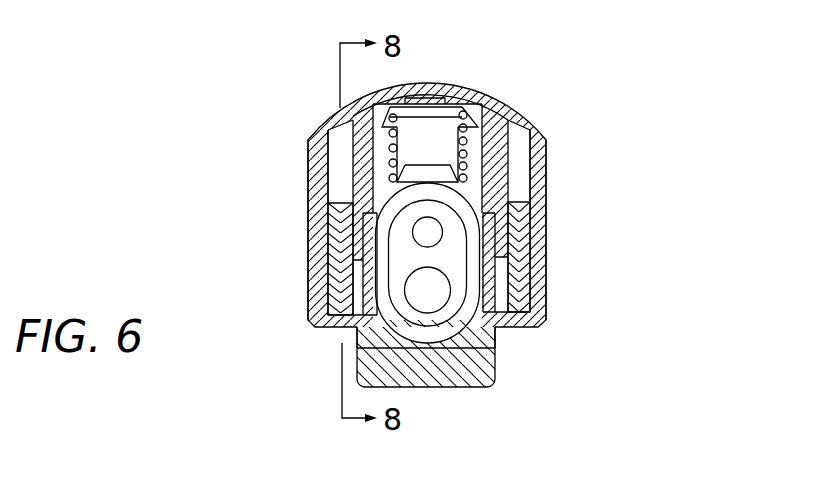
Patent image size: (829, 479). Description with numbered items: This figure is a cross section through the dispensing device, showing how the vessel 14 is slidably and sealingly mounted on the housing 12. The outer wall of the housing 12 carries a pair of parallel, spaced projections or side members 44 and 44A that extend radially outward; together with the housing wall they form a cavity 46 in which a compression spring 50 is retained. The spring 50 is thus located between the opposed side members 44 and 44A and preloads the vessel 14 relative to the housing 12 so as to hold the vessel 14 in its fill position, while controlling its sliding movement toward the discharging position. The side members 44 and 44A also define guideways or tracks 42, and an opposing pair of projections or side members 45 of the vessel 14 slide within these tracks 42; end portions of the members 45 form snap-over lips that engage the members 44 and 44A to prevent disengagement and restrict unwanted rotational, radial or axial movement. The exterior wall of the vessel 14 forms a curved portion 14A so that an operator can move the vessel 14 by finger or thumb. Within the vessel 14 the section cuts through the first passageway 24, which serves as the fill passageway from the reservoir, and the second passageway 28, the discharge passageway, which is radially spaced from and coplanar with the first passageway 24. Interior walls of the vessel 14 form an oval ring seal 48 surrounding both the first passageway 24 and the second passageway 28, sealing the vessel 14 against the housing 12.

The housing 12 is at (568, 123).
The vessel 14 is at (509, 367).
The curved portion 14A is at (356, 352).
The first passageway 24 is at (443, 237).
The second passageway 28 is at (452, 295).
The guideways 42 is at (340, 175).
The side member 44 is at (530, 127).
The side member 44A is at (347, 120).
The side members 45 is at (338, 255).
The cavity 46 is at (435, 136).
The oval ring seal 48 is at (385, 306).
The compression spring 50 is at (467, 147).